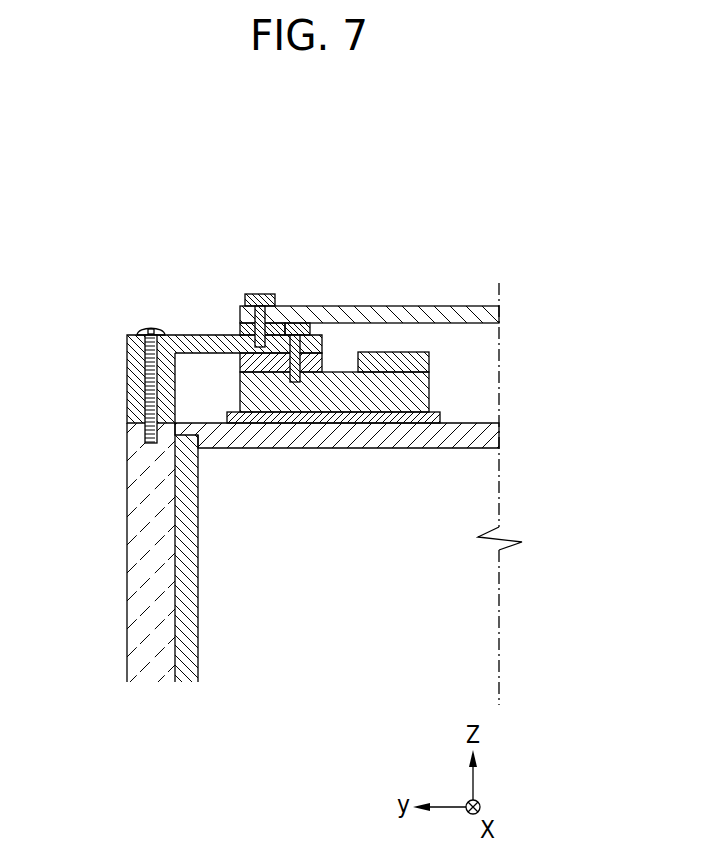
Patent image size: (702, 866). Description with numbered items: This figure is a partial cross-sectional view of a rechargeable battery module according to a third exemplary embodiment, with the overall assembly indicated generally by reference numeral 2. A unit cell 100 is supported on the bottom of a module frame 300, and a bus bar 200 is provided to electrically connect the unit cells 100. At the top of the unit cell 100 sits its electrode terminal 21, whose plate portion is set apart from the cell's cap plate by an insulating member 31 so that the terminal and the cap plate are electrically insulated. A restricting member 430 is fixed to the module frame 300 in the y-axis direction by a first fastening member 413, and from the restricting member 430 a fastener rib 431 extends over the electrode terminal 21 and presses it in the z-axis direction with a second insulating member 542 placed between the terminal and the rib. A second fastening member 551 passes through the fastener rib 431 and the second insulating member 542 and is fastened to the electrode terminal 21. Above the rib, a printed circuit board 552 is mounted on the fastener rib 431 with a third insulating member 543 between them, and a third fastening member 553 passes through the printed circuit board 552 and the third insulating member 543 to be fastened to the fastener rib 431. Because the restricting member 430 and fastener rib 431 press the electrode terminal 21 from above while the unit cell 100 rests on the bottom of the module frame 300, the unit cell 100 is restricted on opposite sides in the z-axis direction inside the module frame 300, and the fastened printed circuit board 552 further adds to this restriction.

The display device 2 is at (474, 271).
The electrode terminal 21 is at (413, 387).
The insulating member 31 is at (441, 418).
The unit cell 100 is at (482, 435).
The bus bar 200 is at (415, 362).
The module frame 300 is at (140, 518).
The first fastening member 413 is at (143, 330).
The restricting member 430 is at (138, 365).
The fastener rib 431 is at (191, 333).
The second insulating member 542 is at (315, 362).
The third insulating member 543 is at (238, 329).
The second fastening member 551 is at (298, 326).
The printed circuit board 552 is at (420, 313).
The third fastening member 553 is at (249, 294).